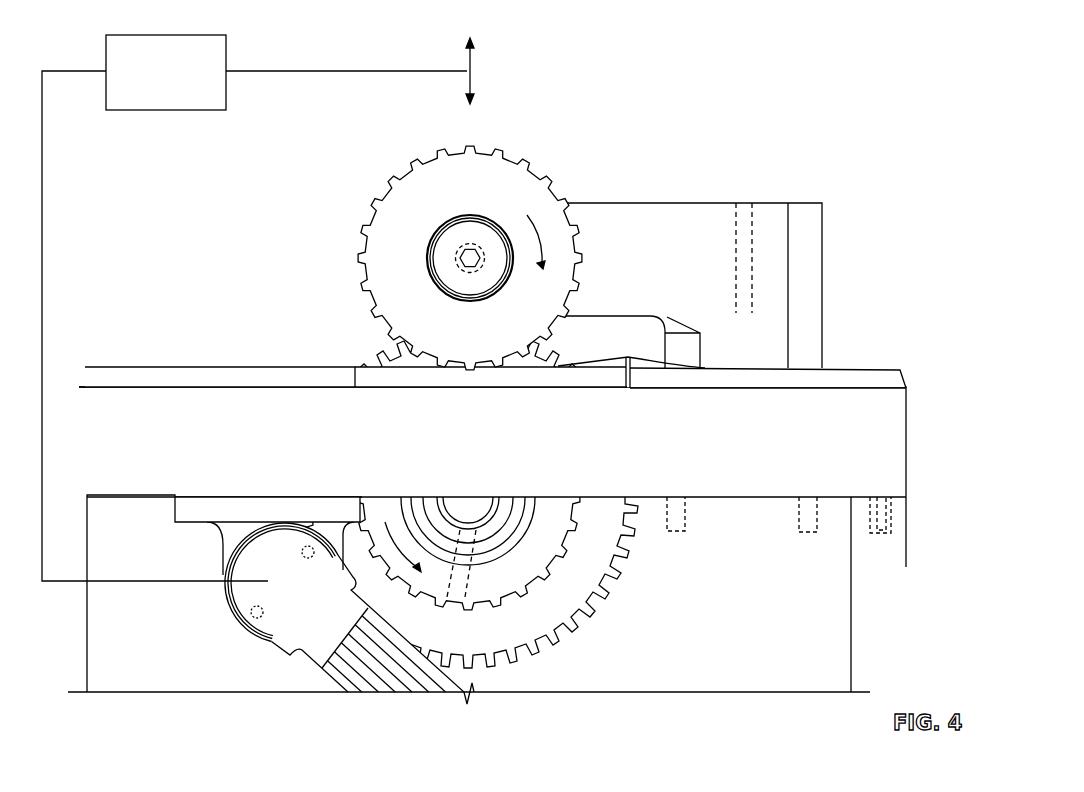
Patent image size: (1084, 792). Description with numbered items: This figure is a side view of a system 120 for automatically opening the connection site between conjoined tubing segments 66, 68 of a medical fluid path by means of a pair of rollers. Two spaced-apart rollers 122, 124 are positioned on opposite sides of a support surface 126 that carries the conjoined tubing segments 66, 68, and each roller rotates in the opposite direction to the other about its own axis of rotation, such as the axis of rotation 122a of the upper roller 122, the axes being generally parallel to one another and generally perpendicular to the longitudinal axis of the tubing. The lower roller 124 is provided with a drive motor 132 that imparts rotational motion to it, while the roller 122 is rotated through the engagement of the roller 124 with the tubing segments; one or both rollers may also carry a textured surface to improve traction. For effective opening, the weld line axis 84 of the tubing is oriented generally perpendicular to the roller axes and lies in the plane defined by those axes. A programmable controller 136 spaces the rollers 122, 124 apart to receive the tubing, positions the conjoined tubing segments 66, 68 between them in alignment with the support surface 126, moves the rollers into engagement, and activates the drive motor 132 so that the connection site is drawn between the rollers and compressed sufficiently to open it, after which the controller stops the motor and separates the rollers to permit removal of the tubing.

The programmable controller 136 is at (160, 34).
The roller 122 is at (506, 170).
The axis of rotation 122a is at (466, 258).
The system 120 is at (684, 191).
The weld line axis 84 is at (647, 363).
The conjoined tubing segment 66 is at (305, 383).
The conjoined tubing segment 68 is at (880, 368).
The support surface 126 is at (846, 451).
The drive motor 132 is at (270, 545).
The roller 124 is at (535, 558).